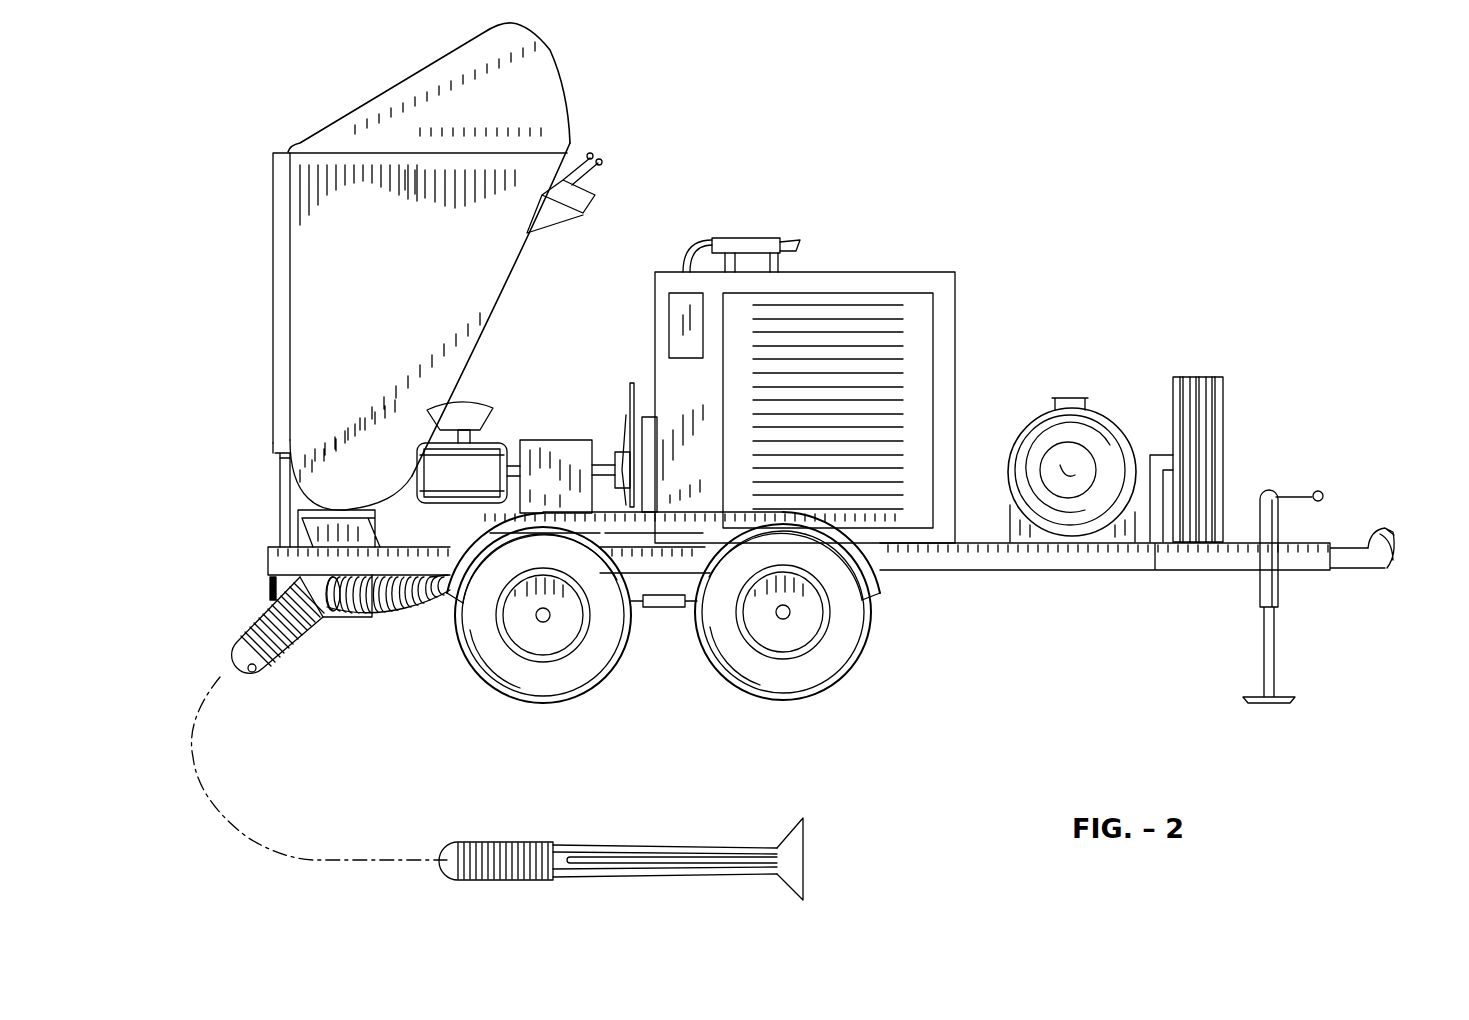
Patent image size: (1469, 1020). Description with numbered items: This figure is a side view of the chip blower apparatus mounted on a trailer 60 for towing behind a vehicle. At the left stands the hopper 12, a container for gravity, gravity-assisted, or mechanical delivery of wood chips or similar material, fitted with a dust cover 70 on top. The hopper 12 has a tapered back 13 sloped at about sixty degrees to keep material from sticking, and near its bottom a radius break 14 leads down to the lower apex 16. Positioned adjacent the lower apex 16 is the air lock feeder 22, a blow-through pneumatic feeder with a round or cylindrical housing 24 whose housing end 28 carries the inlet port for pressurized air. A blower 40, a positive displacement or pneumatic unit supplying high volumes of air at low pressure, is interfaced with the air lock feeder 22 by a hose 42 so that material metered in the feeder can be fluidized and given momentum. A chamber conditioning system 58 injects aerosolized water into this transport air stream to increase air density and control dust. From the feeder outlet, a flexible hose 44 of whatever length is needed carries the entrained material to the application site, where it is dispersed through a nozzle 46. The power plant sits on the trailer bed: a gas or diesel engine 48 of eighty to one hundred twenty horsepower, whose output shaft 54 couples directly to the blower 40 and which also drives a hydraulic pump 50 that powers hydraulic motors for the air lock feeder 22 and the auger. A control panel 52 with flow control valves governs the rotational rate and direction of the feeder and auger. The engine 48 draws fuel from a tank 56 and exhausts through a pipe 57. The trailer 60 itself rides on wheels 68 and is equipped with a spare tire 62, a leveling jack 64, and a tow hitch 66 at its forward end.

The hopper 12 is at (317, 320).
The tapered back 13 is at (510, 260).
The radius break 14 is at (297, 492).
The lower apex 16 is at (310, 517).
The air lock feeder 22 is at (338, 622).
The housing 24 is at (322, 618).
The housing end 28 is at (303, 583).
The blower 40 is at (495, 445).
The hose 42 is at (377, 610).
The hose 44 is at (237, 652).
The nozzle 46 is at (793, 860).
The engine 48 is at (918, 315).
The hydraulic pump 50 is at (537, 455).
The control panel 52 is at (588, 213).
The output shaft 54 is at (600, 467).
The tank 56 is at (1040, 430).
The pipe 57 is at (745, 240).
The chamber conditioning system 58 is at (423, 607).
The trailer 60 is at (938, 560).
The spare tire 62 is at (1197, 395).
The leveling jack 64 is at (1268, 527).
The tow hitch 66 is at (1396, 562).
The wheels 68 is at (515, 700).
The dust cover 70 is at (557, 88).